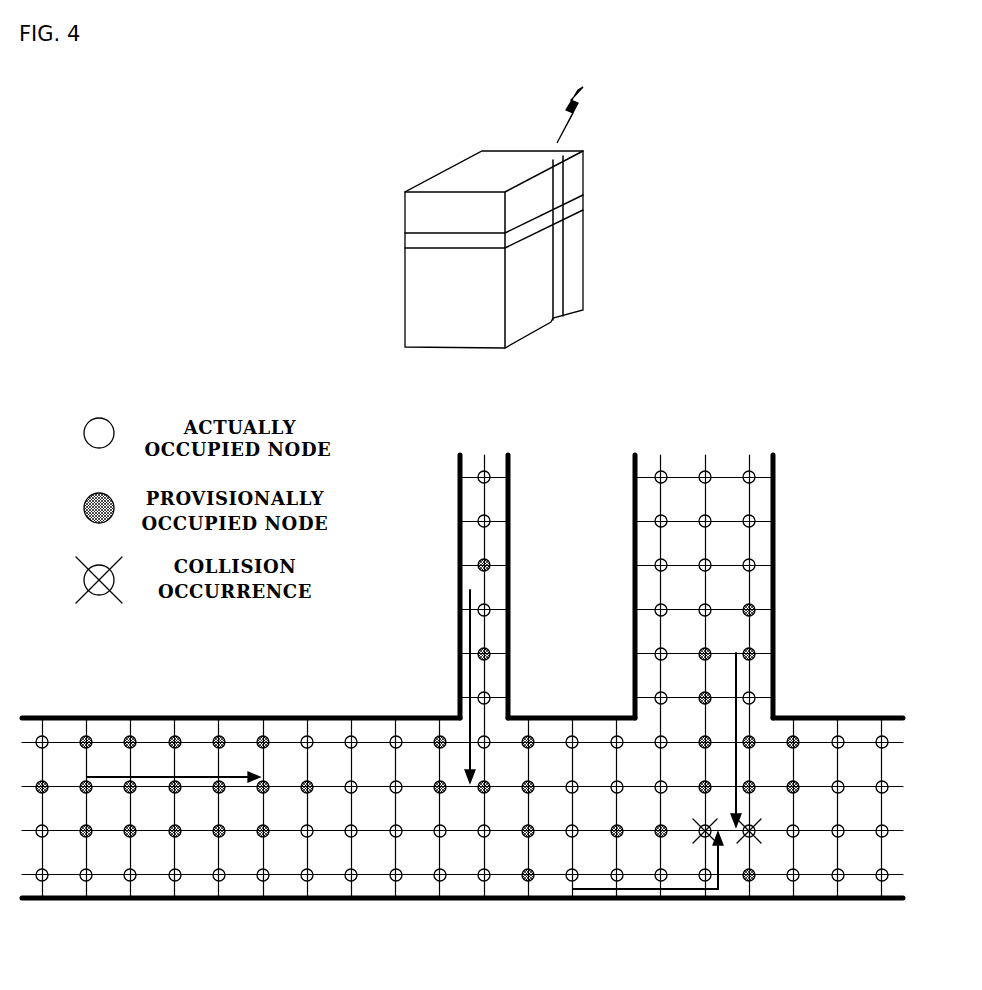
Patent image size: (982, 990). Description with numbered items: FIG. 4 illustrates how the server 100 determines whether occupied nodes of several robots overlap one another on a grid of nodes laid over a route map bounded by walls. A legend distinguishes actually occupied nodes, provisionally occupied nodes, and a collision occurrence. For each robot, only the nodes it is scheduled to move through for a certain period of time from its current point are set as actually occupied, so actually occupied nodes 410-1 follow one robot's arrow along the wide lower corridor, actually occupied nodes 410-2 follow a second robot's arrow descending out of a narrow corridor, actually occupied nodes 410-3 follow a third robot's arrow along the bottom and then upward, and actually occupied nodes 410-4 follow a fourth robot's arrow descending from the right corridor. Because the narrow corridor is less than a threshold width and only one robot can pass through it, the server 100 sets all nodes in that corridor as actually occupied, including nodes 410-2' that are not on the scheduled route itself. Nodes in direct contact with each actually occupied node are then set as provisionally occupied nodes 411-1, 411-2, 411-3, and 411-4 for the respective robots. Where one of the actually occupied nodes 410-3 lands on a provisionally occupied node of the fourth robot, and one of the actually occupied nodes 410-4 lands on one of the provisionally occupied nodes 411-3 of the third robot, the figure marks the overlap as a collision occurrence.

The server 100 is at (502, 150).
The actually occupied nodes 410-1 is at (87, 777).
The actually occupied nodes 410-2 is at (414, 686).
The nodes not included in the scheduled moving route 410-2' is at (404, 586).
The actually occupied nodes 410-3 is at (573, 891).
The actually occupied nodes 410-4 is at (752, 651).
The provisionally occupied nodes 411-1 is at (220, 712).
The provisionally occupied nodes 411-2 is at (437, 737).
The provisionally occupied nodes 411-3 is at (525, 881).
The provisionally occupied nodes 411-4 is at (756, 606).